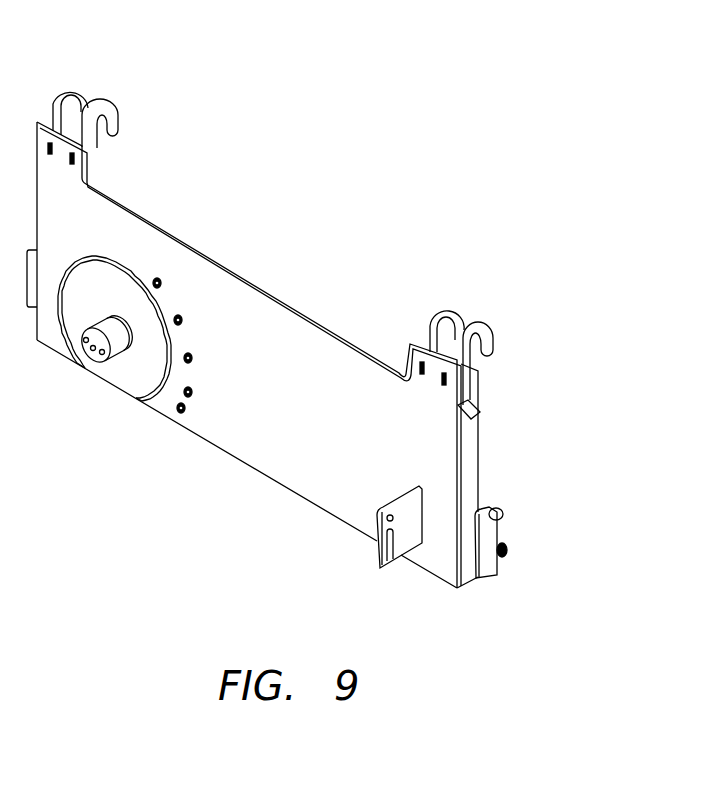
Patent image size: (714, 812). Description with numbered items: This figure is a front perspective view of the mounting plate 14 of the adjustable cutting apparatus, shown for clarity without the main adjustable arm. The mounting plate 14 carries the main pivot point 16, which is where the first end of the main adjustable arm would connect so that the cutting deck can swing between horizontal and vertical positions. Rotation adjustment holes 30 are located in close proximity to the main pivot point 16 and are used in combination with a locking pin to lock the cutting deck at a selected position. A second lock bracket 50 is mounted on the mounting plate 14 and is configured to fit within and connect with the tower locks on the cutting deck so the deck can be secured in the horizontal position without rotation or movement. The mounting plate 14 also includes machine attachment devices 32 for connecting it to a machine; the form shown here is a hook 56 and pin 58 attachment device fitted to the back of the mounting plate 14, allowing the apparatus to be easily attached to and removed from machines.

The mounting plate 14 is at (250, 442).
The main pivot point 16 is at (107, 322).
The rotation adjustment holes 30 is at (191, 391).
The machine attachment devices 32 is at (121, 91).
The second lock bracket 50 is at (410, 533).
The hook 56 is at (110, 127).
The pin 58 is at (483, 530).